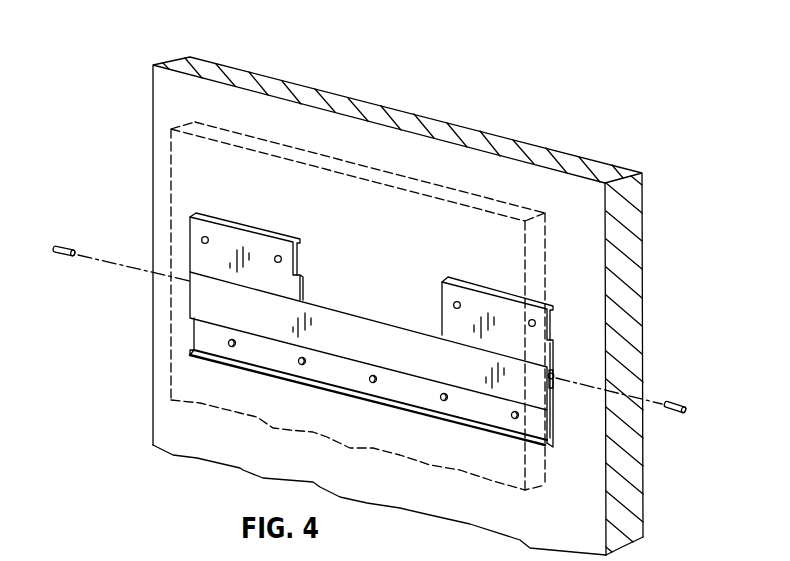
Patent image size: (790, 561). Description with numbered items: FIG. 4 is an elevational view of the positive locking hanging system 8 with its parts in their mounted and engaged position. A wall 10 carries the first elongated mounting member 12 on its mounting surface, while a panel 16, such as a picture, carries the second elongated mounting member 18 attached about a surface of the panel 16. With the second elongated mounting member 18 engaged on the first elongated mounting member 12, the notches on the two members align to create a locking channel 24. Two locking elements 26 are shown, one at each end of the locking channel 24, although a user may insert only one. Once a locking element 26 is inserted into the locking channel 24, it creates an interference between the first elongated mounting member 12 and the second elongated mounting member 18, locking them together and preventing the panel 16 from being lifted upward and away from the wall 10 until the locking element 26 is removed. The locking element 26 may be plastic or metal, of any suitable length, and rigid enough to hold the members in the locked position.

The positive locking hanging system 8 is at (473, 332).
The wall 10 is at (422, 122).
The first elongated mounting member 12 is at (517, 360).
The panel 16 is at (292, 148).
The second elongated mounting member 18 is at (512, 302).
The locking channel 24 is at (620, 410).
The locking element 26 is at (59, 246).